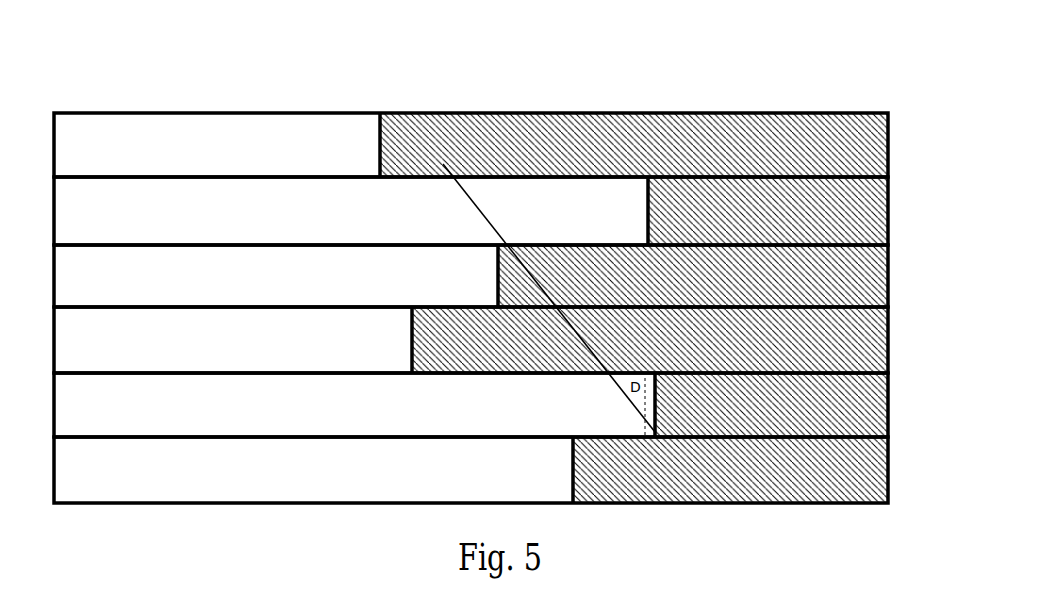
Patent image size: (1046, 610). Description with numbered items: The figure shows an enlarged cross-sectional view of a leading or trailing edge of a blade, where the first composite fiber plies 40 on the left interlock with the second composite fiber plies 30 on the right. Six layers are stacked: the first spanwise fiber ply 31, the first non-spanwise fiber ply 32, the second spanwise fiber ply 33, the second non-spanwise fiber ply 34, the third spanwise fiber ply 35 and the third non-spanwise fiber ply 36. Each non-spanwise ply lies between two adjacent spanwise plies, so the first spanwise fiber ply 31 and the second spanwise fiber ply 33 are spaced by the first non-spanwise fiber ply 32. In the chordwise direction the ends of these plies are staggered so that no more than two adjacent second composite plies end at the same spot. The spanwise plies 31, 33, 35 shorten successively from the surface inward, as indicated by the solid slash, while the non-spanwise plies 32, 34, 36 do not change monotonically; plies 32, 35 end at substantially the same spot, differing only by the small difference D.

The second composite part (hatched composite fiber plies) 30 is at (625, 100).
The first composite part (composite fiber plies) 40 is at (236, 98).
The first spanwise fiber ply 31 is at (888, 133).
The first non-spanwise fiber ply 32 is at (888, 196).
The second spanwise fiber ply 33 is at (888, 266).
The second non-spanwise fiber ply 34 is at (888, 338).
The third spanwise fiber ply 35 is at (888, 406).
The third non-spanwise fiber ply 36 is at (888, 472).